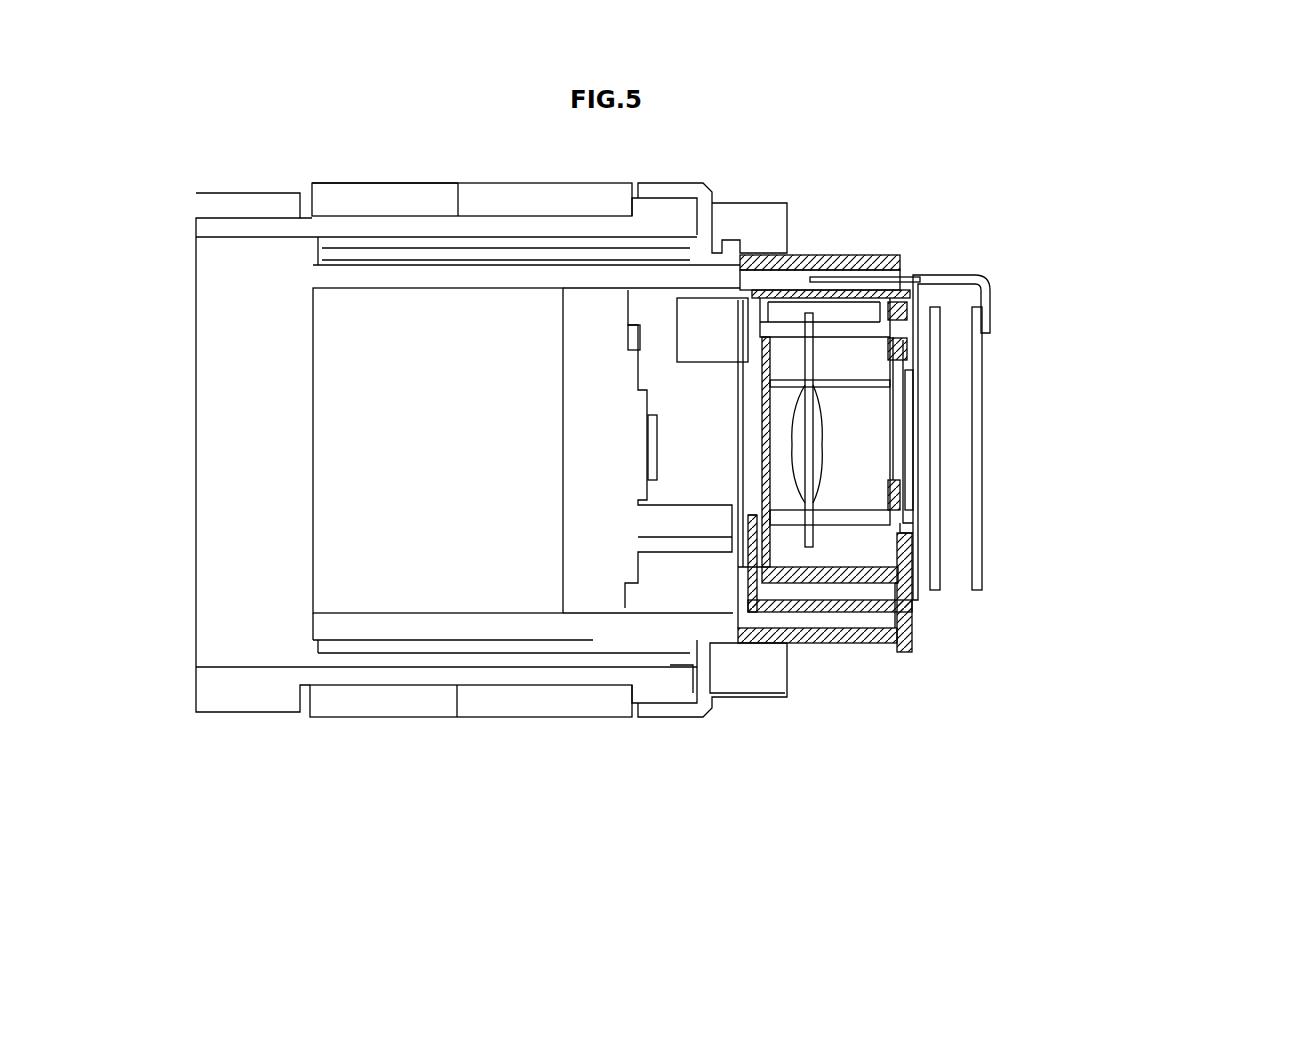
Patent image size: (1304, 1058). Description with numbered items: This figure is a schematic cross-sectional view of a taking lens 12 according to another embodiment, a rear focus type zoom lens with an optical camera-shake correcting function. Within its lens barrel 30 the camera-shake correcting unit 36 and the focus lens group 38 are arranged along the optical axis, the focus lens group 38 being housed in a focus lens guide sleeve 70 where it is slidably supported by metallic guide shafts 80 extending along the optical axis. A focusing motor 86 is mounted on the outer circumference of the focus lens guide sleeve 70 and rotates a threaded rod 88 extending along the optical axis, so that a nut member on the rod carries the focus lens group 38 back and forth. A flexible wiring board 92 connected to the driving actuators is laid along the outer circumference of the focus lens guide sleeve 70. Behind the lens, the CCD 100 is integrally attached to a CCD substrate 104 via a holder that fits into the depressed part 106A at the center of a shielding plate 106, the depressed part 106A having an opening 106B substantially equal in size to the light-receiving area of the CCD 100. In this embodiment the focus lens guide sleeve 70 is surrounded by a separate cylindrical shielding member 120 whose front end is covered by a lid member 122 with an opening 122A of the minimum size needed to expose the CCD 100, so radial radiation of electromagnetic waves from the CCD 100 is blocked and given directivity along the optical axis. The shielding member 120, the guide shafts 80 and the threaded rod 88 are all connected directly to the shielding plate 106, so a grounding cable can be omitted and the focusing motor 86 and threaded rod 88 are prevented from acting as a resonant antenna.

The taking lens 12 is at (432, 174).
The lens barrel 30 is at (540, 185).
The camera-shake correcting unit 36 is at (572, 354).
The focus lens group 38 is at (800, 430).
The focus lens guide sleeve 70 is at (820, 578).
The guide shaft 80 is at (855, 512).
The focusing motor 86 is at (703, 362).
The threaded rod 88 is at (823, 330).
The flexible wiring board 92 is at (887, 278).
The CCD 100 is at (920, 442).
The CCD substrate 104 is at (940, 357).
The shielding plate 106 is at (920, 296).
The depressed part 106A is at (905, 524).
The opening 106B is at (905, 470).
The cylindrical shielding member 120 is at (865, 618).
The lid member 122 is at (745, 556).
The opening 122A is at (755, 510).